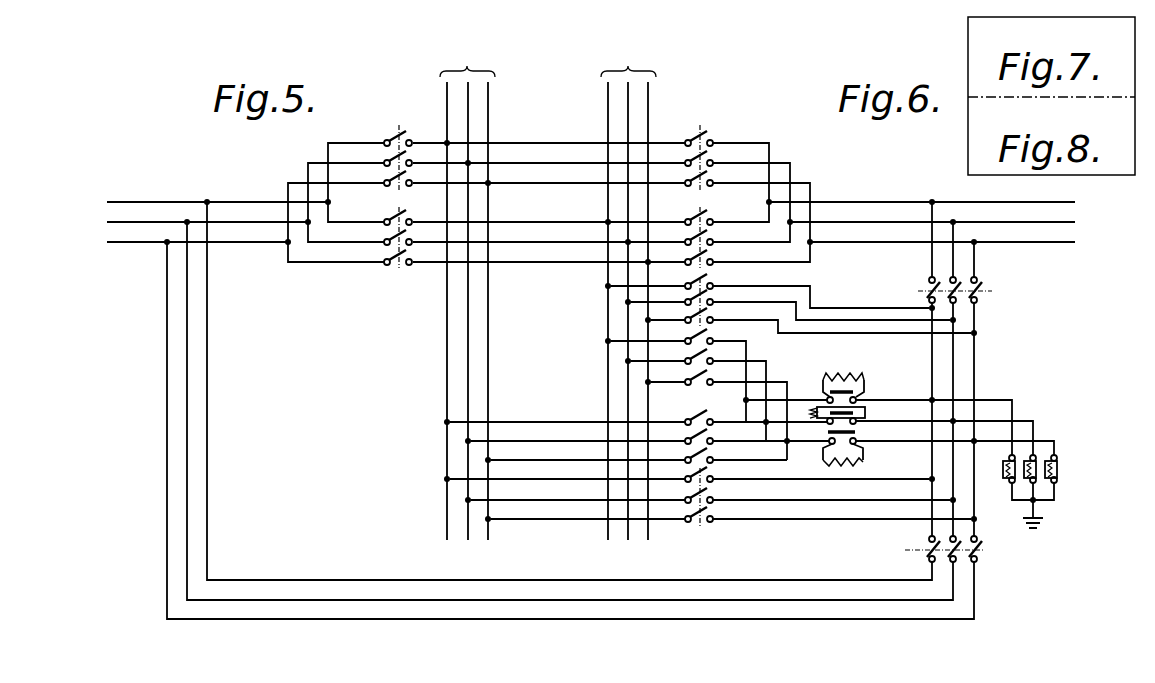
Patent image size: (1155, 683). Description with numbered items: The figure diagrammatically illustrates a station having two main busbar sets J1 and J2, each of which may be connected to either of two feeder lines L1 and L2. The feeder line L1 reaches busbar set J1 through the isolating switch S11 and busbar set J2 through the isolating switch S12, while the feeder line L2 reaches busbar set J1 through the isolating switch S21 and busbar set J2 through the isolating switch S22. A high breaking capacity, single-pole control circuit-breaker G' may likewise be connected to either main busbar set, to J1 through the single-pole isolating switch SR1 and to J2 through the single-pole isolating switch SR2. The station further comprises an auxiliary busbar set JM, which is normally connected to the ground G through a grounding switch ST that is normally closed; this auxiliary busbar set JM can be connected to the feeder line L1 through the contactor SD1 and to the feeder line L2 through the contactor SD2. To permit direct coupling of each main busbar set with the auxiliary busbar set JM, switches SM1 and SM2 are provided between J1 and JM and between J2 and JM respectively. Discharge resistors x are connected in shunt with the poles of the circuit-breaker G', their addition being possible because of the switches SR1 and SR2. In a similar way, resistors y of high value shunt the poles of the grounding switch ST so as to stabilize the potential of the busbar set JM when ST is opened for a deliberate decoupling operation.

In FIG. 5, the feeder line L1 is at (208, 222).
In FIG. 6, the feeder line L2 is at (931, 222).
In FIG. 5, the isolating switch S11 is at (398, 151).
In FIG. 5, the isolating switch S12 is at (398, 232).
In FIG. 6, the isolating switch S21 is at (699, 151).
In FIG. 6, the isolating switch S22 is at (699, 232).
In FIG. 5, the main busbar set J1 is at (467, 294).
In FIG. 6, the main busbar set J2 is at (628, 294).
In FIG. 6, the switch SM1 is at (710, 507).
In FIG. 6, the switch SM2 is at (791, 300).
In FIG. 6, the single-pole isolating switch SR1 is at (618, 432).
In FIG. 6, the single-pole isolating switch SR2 is at (700, 394).
In FIG. 6, the contactor SD1 is at (961, 550).
In FIG. 6, the contactor SD2 is at (970, 290).
In FIG. 6, the auxiliary busbar set JM is at (966, 419).
In FIG. 6, the control circuit-breaker G' is at (837, 409).
In FIG. 6, the discharge resistors x is at (864, 375).
In FIG. 6, the resistors y is at (998, 471).
In FIG. 6, the grounding switch ST is at (1066, 469).
In FIG. 6, the ground G is at (1041, 527).